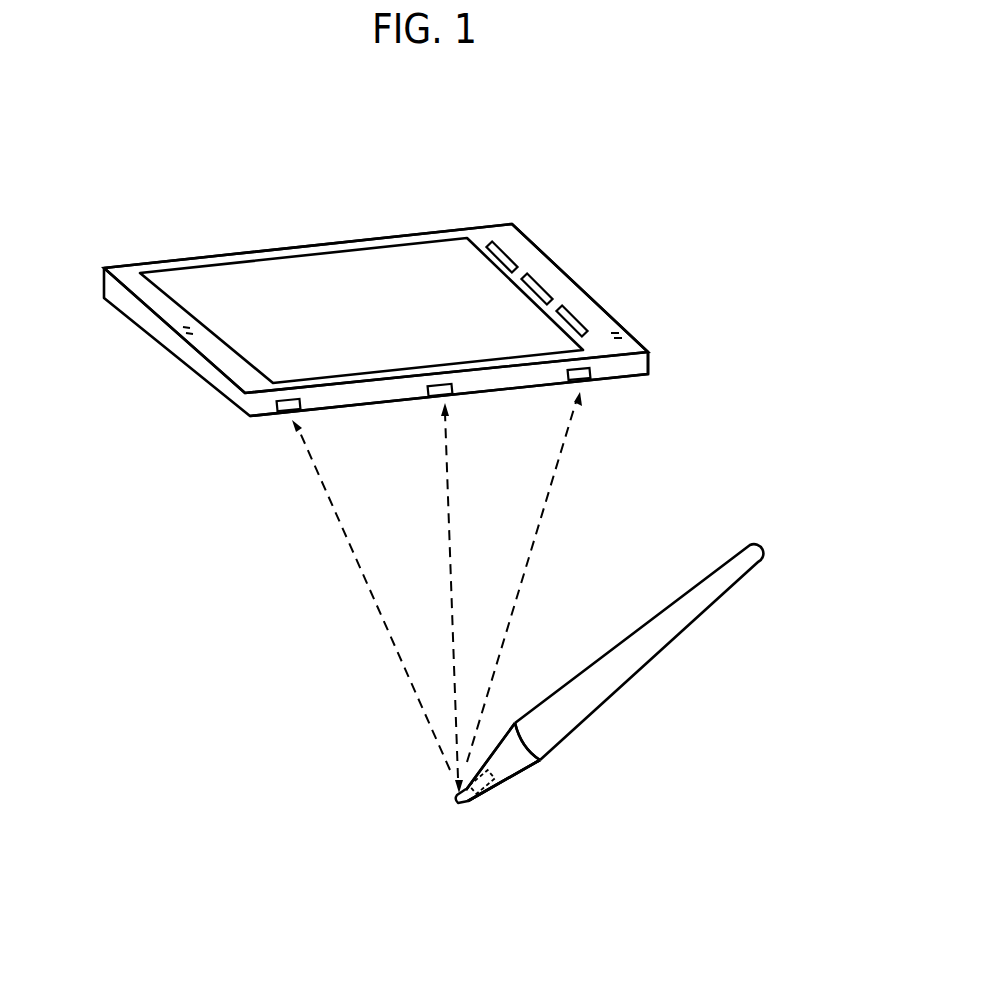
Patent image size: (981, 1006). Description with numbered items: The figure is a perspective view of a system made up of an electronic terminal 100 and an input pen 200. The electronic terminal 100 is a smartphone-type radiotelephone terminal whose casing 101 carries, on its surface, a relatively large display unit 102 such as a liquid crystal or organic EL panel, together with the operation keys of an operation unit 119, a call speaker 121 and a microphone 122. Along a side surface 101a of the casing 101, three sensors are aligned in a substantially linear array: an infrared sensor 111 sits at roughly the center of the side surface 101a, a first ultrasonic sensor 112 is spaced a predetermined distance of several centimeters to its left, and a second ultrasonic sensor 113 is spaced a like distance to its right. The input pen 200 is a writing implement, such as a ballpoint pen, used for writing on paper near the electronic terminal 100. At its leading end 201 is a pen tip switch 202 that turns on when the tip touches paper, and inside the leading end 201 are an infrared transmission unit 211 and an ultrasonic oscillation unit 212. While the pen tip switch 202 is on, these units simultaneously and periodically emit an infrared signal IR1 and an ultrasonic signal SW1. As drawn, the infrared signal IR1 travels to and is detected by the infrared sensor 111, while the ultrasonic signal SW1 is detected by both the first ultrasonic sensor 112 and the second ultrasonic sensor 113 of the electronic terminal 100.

The electronic terminal 100 is at (421, 232).
The casing 101 is at (507, 240).
The side surface 101a is at (642, 378).
The display unit 102 is at (229, 268).
The infrared sensor 111 is at (430, 394).
The first ultrasonic sensor 112 is at (275, 409).
The second ultrasonic sensor 113 is at (588, 381).
The operation unit 119 is at (577, 318).
The call speaker 121 is at (177, 323).
The microphone 122 is at (623, 335).
The input pen 200 is at (647, 753).
The leading end 201 is at (483, 800).
The pen tip switch 202 is at (462, 804).
The infrared transmission unit 211 is at (487, 799).
The ultrasonic oscillation unit 212 is at (492, 778).
The ultrasonic signal SW1 is at (337, 527).
The infrared signal IR1 is at (450, 500).